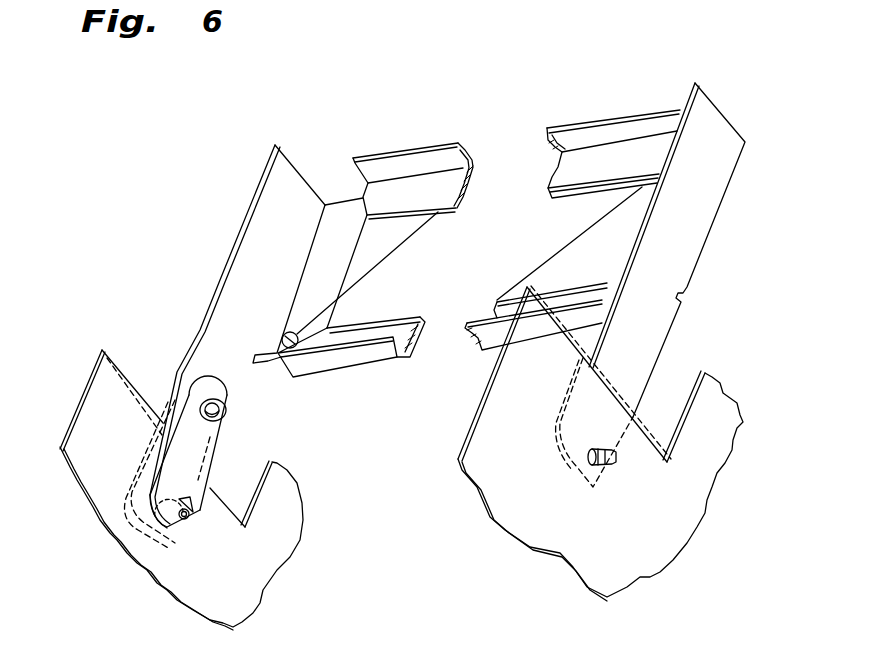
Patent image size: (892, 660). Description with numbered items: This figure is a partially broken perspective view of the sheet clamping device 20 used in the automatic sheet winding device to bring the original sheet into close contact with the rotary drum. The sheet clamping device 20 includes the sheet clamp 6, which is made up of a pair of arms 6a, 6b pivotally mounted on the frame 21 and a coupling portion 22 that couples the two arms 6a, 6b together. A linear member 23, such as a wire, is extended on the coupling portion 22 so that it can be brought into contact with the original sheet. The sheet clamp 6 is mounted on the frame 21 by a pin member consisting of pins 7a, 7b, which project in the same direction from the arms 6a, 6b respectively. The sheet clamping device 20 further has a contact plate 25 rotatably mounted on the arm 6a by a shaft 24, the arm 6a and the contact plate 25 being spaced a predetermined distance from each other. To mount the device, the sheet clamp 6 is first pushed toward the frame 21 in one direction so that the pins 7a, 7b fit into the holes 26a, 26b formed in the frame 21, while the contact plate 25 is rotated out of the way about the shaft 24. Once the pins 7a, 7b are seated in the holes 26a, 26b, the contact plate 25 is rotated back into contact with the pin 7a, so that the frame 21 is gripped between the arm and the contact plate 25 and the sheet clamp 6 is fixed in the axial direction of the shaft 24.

The sheet clamping device 20 is at (506, 108).
The sheet clamp 6 is at (245, 210).
The arm 6a is at (282, 170).
The arm 6b is at (718, 128).
The frame 21 is at (102, 400).
The coupling portion 22 is at (430, 152).
The linear member 23 is at (397, 252).
The shaft 24 is at (222, 408).
The contact plate 25 is at (203, 448).
The hole 26a is at (138, 512).
The hole 26b is at (588, 466).
The pin 7a is at (192, 518).
The pin 7b is at (620, 457).